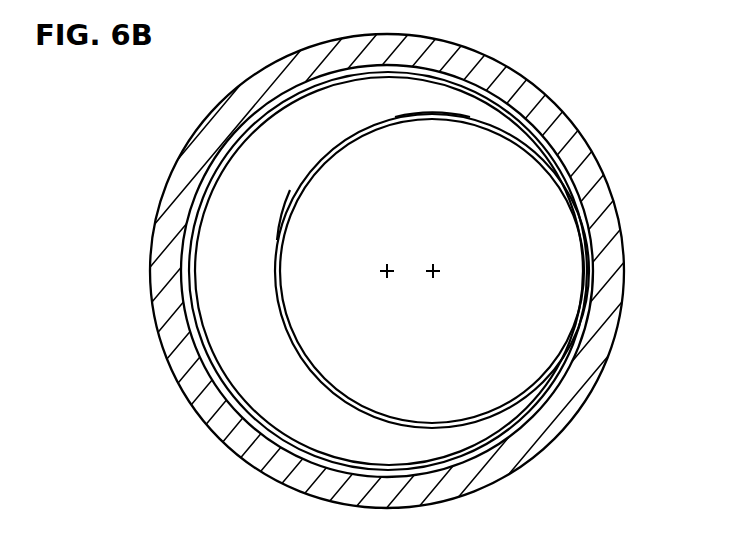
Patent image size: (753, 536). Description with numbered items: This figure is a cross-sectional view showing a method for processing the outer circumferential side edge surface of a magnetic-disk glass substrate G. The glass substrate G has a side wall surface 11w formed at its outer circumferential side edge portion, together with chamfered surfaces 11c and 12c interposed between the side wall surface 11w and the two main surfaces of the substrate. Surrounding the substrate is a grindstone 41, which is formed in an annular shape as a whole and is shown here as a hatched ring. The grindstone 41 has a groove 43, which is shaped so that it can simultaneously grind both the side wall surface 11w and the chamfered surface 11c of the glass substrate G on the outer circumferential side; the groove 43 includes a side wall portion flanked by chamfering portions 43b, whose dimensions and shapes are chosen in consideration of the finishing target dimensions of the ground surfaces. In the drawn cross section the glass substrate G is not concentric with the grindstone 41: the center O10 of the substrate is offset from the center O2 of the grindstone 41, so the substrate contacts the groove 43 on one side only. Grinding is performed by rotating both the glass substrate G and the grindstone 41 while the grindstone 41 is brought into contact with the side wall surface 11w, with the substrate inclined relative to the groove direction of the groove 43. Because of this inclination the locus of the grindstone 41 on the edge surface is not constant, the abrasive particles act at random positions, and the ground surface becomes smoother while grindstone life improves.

The grindstone 41 is at (571, 107).
The groove 43 is at (190, 264).
The chamfering portion 43b is at (188, 304).
The side wall surface 11w is at (372, 120).
The chamfered surface 12c is at (313, 167).
The chamfered surface 11c is at (415, 114).
The magnetic-disk glass substrate G is at (282, 214).
The center of housing O2 is at (392, 257).
The center of shaft O10 is at (444, 257).